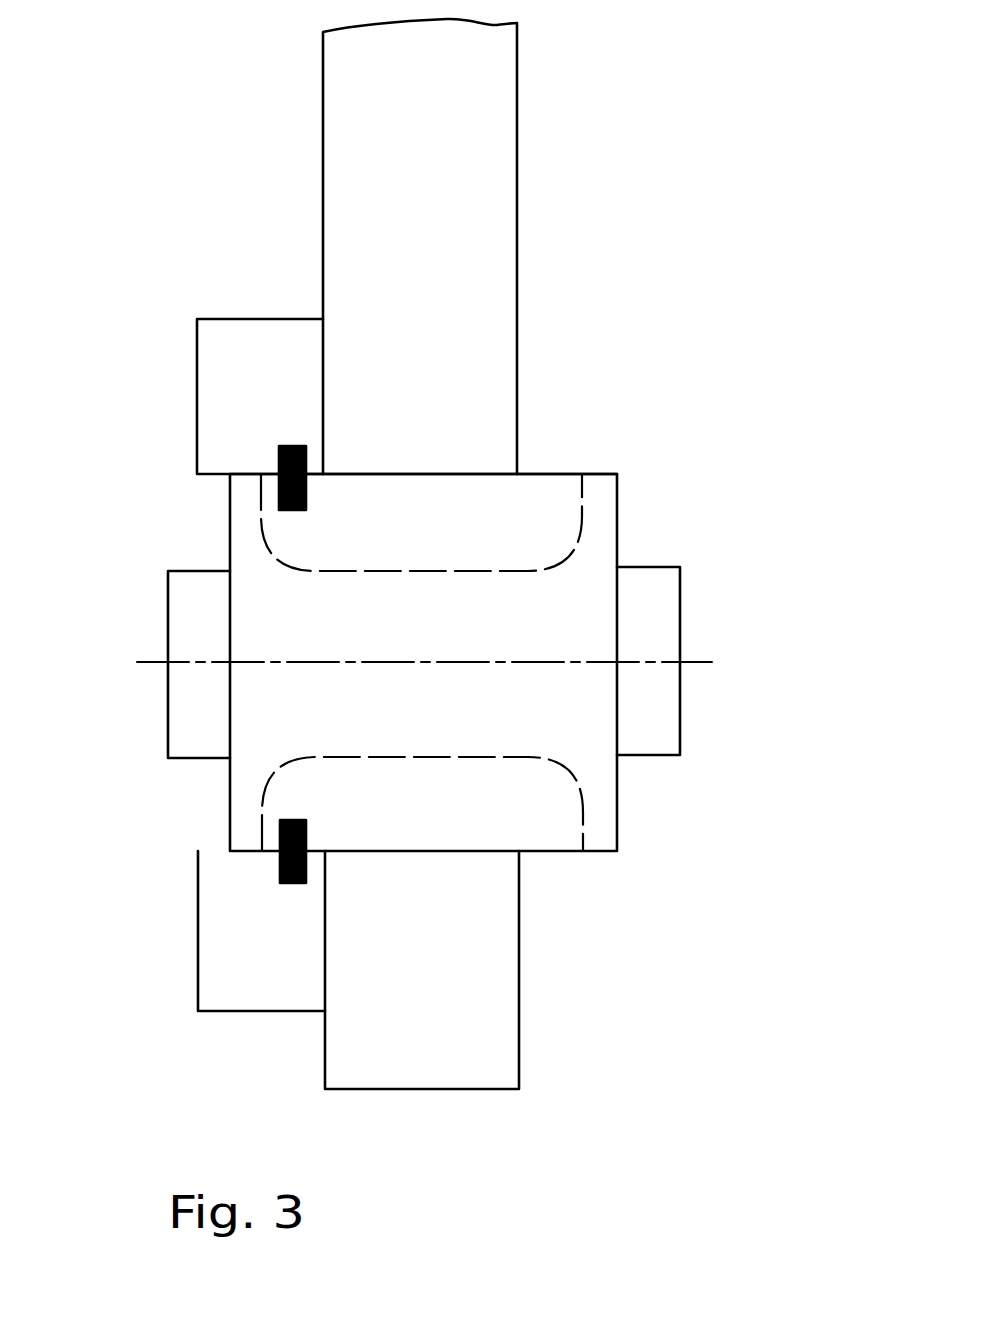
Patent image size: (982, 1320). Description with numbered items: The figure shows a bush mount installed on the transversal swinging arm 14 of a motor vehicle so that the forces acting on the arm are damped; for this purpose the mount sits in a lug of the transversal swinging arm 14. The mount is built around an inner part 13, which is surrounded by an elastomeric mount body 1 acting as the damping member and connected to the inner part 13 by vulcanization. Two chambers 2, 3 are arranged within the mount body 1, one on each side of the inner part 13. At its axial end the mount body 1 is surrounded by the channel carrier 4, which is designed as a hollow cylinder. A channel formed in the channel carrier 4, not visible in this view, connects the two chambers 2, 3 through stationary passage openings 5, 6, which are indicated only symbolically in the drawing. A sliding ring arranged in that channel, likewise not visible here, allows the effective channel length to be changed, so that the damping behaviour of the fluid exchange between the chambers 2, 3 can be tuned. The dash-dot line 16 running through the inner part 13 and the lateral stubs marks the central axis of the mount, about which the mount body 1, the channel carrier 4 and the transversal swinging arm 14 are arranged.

The elastomeric mount body 1 is at (556, 592).
The chamber 2 is at (523, 518).
The chamber 3 is at (541, 814).
The channel carrier 4 is at (249, 379).
The passage opening 5 is at (280, 458).
The passage opening 6 is at (280, 878).
The inner part 13 is at (652, 613).
The transversal swinging arm 14 is at (426, 283).
The axis line 16 is at (695, 662).